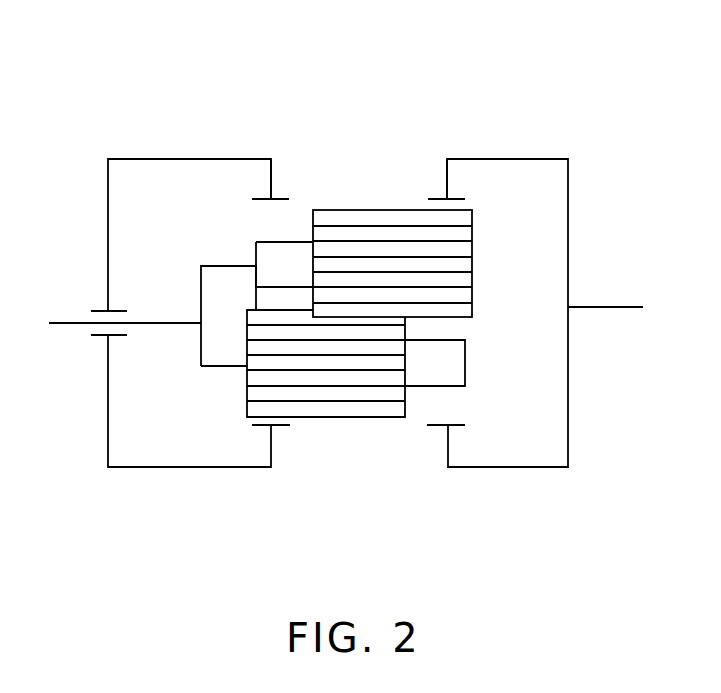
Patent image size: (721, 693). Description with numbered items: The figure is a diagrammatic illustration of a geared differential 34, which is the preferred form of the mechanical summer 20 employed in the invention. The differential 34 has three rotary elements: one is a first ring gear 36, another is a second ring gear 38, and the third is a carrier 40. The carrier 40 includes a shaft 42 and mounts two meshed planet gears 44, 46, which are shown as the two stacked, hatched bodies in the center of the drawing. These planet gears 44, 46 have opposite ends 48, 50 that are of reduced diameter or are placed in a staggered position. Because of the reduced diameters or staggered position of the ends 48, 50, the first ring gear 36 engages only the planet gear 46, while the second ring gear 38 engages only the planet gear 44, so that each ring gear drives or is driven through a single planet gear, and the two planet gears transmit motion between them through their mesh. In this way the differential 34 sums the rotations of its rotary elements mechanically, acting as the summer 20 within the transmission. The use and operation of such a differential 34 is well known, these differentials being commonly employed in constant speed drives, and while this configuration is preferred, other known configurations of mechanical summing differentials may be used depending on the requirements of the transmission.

The mechanical summer 20 is at (350, 80).
The geared differential 34 is at (239, 110).
The first ring gear 36 is at (272, 179).
The second ring gear 38 is at (446, 180).
The carrier 40 is at (198, 342).
The shaft 42 is at (62, 325).
The planet gear 44 is at (472, 259).
The planet gear 46 is at (362, 402).
The end of planet gear 48 is at (226, 265).
The end of planet gear 50 is at (441, 387).